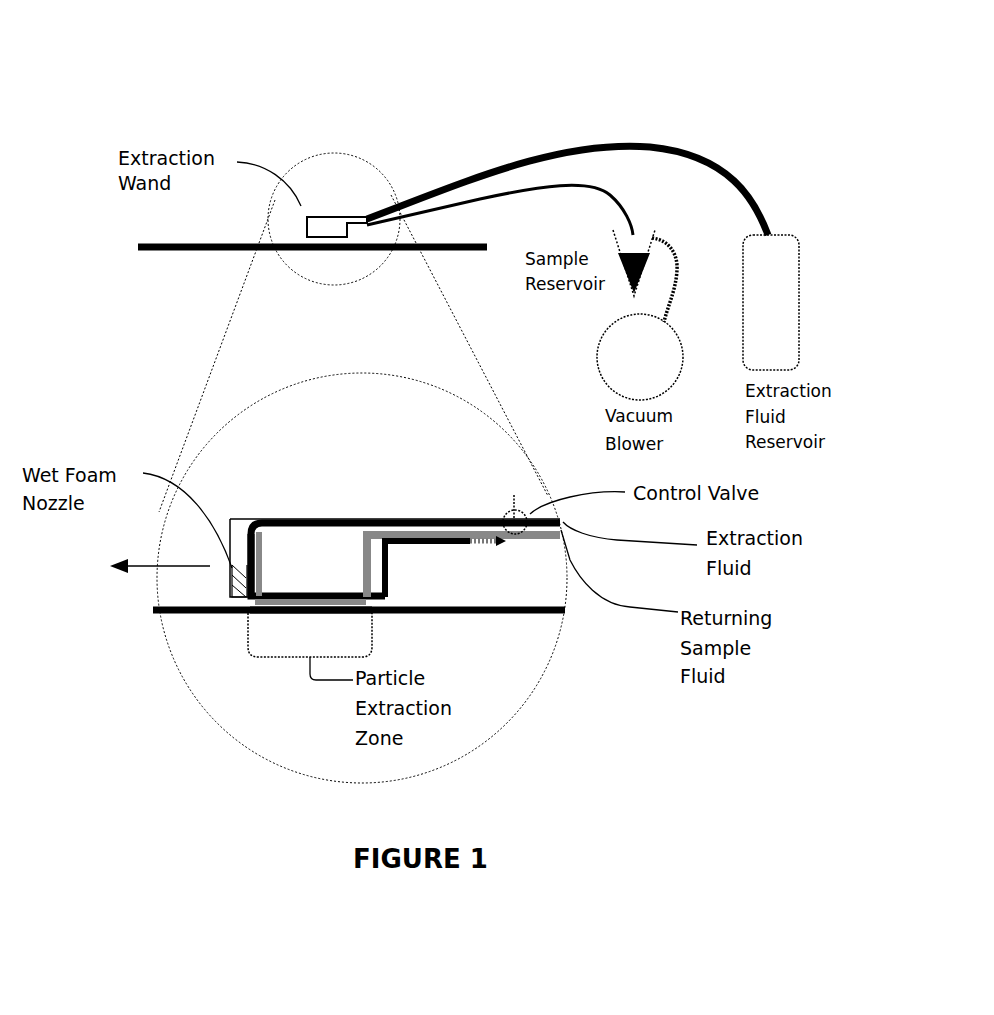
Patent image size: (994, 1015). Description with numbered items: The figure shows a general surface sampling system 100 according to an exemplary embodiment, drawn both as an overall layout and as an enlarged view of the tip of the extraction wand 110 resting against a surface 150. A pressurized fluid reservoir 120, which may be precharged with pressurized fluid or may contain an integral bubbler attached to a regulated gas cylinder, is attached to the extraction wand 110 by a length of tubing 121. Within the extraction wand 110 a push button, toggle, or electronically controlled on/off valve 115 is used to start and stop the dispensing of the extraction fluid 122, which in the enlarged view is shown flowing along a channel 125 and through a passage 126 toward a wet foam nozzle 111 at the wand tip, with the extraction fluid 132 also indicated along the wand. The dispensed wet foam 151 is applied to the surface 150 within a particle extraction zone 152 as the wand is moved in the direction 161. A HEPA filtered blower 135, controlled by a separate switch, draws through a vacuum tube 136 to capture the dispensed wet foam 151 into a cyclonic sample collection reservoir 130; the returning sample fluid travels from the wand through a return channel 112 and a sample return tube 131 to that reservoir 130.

The particle extraction system 100 is at (160, 72).
The extraction wand 110 is at (312, 212).
The wet foam nozzle 111 is at (237, 518).
The return channel 112 is at (447, 545).
The on/off valve 115 is at (503, 515).
The pressurized fluid reservoir 120 is at (799, 256).
The tubing 121 is at (715, 158).
The extraction fluid 122 is at (357, 527).
The supply channel wall 125 is at (251, 588).
The fluid passage 126 is at (363, 596).
The cyclonic sample collection reservoir 130 is at (648, 230).
The sample return tube 131 is at (500, 200).
The extraction fluid 132 is at (463, 532).
The HEPA filtered blower 135 is at (597, 352).
The vacuum tube 136 is at (667, 304).
The surface 150 is at (180, 250).
The wet foam 151 is at (293, 613).
The particle extraction zone 152 is at (298, 659).
The wand movement direction 161 is at (148, 571).